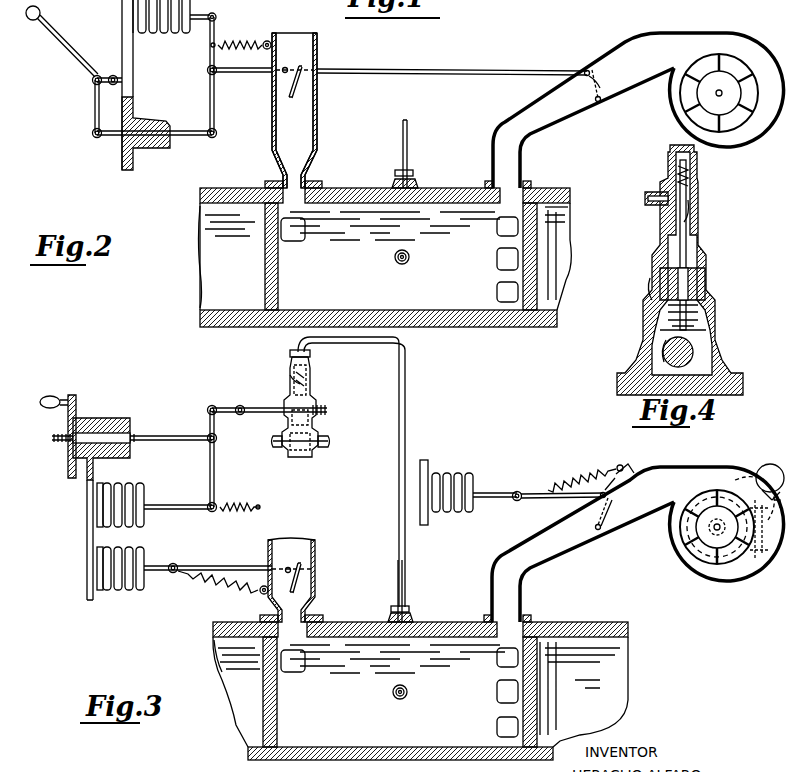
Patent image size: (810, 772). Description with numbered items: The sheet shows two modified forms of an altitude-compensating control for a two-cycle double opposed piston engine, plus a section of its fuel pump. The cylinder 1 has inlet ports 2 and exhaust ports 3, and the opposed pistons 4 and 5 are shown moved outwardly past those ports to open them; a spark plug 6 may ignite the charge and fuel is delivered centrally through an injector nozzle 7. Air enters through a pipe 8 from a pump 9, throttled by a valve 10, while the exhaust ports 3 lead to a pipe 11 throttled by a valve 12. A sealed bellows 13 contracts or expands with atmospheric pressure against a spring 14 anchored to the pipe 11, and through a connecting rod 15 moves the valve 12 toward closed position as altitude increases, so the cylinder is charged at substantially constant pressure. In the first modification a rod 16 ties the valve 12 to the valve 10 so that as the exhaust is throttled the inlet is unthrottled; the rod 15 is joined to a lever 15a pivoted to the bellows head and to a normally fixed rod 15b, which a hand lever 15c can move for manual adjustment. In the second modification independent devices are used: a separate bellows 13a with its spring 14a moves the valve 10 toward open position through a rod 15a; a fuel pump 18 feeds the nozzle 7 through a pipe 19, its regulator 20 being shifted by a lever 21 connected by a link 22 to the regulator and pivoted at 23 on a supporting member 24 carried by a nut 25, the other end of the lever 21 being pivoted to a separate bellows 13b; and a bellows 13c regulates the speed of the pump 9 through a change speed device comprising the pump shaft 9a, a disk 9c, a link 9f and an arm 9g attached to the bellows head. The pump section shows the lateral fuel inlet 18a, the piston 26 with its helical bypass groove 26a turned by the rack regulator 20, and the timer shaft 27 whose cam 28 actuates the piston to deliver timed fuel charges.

In FIG. 2, the cylinder 1 is at (440, 187).
In FIG. 3, the cylinder 1 is at (446, 621).
In FIG. 2, the inlet ports 2 is at (497, 223).
In FIG. 3, the inlet ports 2 is at (497, 655).
In FIG. 2, the exhaust ports 3 is at (302, 226).
In FIG. 3, the exhaust ports 3 is at (300, 662).
In FIG. 2, the piston 4 is at (546, 268).
In FIG. 3, the piston 4 is at (540, 704).
In FIG. 2, the piston 5 is at (262, 259).
In FIG. 3, the piston 5 is at (263, 698).
In FIG. 2, the spark plug 6 is at (407, 253).
In FIG. 3, the spark plug 6 is at (404, 698).
In FIG. 2, the injector nozzle 7 is at (400, 200).
In FIG. 3, the injector nozzle 7 is at (399, 633).
In FIG. 2, the pipe 8 is at (553, 132).
In FIG. 3, the pipe 8 is at (546, 560).
In FIG. 2, the pump 9 is at (672, 108).
In FIG. 3, the pump 9 is at (674, 557).
In FIG. 3, the pump shaft 9a is at (740, 575).
In FIG. 3, the disk 9c is at (702, 585).
In FIG. 3, the link 9f is at (755, 566).
In FIG. 3, the arm 9g is at (726, 472).
In FIG. 2, the valve 10 is at (598, 102).
In FIG. 3, the valve 10 is at (597, 531).
In FIG. 2, the pipe 11 is at (318, 122).
In FIG. 3, the pipe 11 is at (313, 556).
In FIG. 2, the valve 12 is at (296, 96).
In FIG. 3, the valve 12 is at (302, 569).
In FIG. 2, the bellows 13 is at (152, 38).
In FIG. 3, the bellows 13 is at (148, 556).
In FIG. 3, the bellows 13a is at (464, 472).
In FIG. 3, the bellows 13b is at (123, 492).
In FIG. 3, the bellows 13c is at (766, 465).
In FIG. 2, the spring 14 is at (244, 40).
In FIG. 3, the spring 14 is at (228, 590).
In FIG. 3, the spring 14a is at (573, 470).
In FIG. 2, the connecting rod 15 is at (241, 74).
In FIG. 3, the connecting rod 15 is at (214, 566).
In FIG. 2, the lever 15a is at (217, 105).
In FIG. 3, the lever 15a is at (542, 500).
In FIG. 2, the rod 15b is at (182, 140).
In FIG. 2, the lever 15c is at (68, 40).
In FIG. 2, the rod 16 is at (452, 68).
In FIG. 3, the fuel pump 18 is at (312, 387).
In FIG. 4, the fuel inlet 18a is at (645, 207).
In FIG. 3, the pipe 19 is at (407, 410).
In FIG. 4, the regulator 20 is at (650, 292).
In FIG. 3, the regulator 20 is at (247, 406).
In FIG. 3, the lever 21 is at (216, 479).
In FIG. 3, the link 22 is at (211, 406).
In FIG. 3, the pivot 23 is at (217, 440).
In FIG. 3, the supporting member 24 is at (160, 436).
In FIG. 3, the nut 25 is at (73, 448).
In FIG. 4, the piston 26 is at (688, 250).
In FIG. 4, the helical groove 26a is at (690, 216).
In FIG. 4, the timer shaft 27 is at (693, 352).
In FIG. 3, the timer shaft 27 is at (322, 438).
In FIG. 4, the cam 28 is at (663, 352).